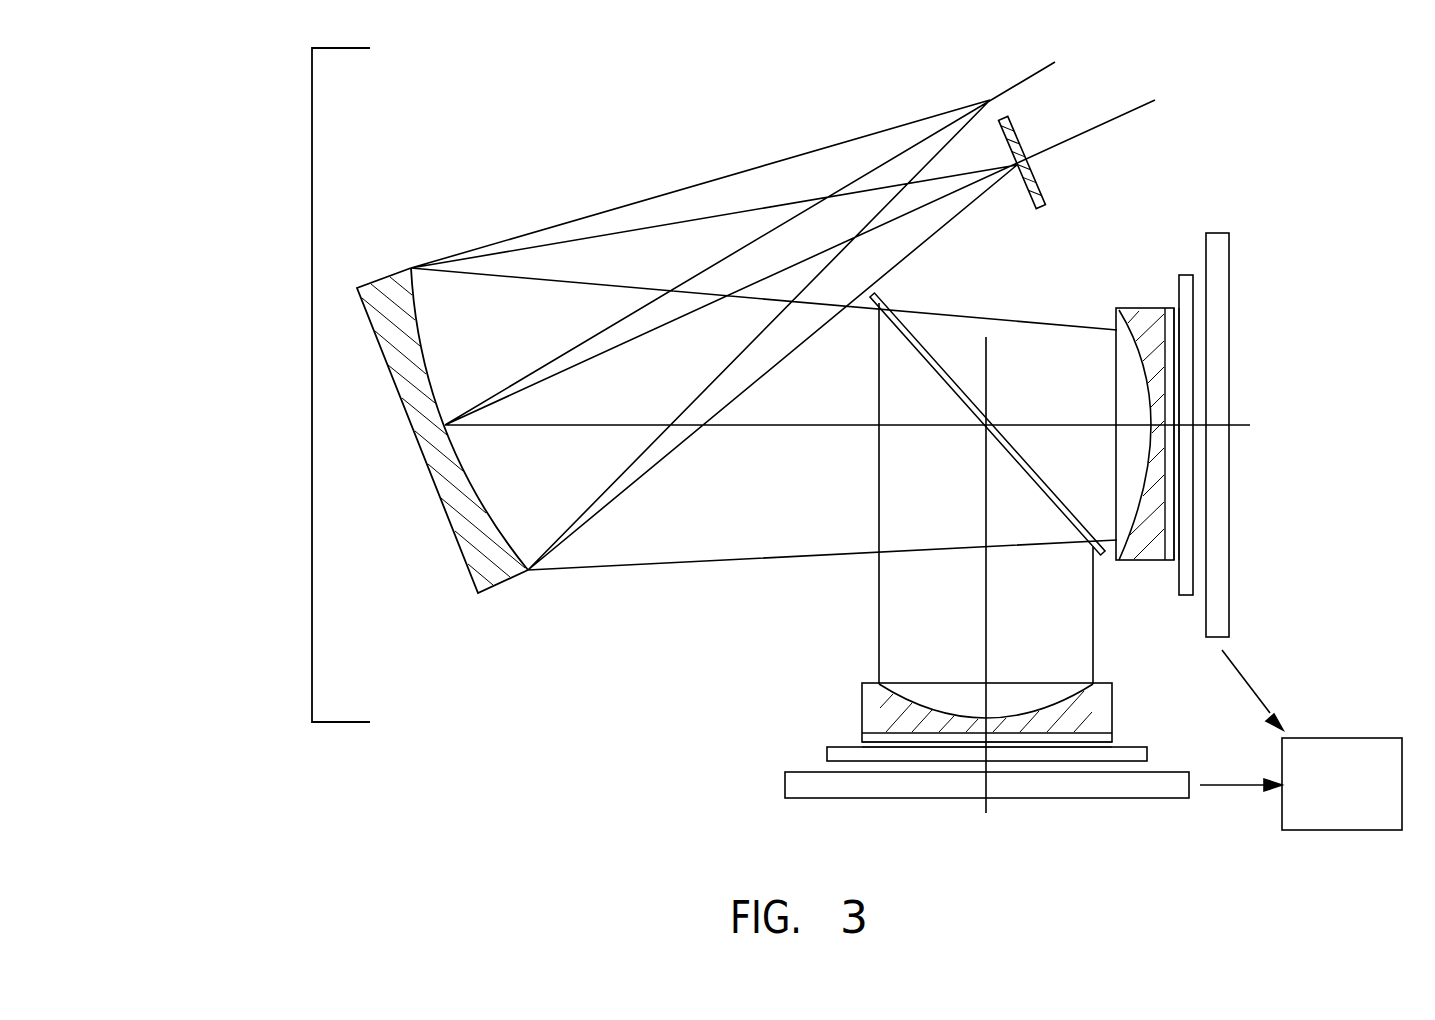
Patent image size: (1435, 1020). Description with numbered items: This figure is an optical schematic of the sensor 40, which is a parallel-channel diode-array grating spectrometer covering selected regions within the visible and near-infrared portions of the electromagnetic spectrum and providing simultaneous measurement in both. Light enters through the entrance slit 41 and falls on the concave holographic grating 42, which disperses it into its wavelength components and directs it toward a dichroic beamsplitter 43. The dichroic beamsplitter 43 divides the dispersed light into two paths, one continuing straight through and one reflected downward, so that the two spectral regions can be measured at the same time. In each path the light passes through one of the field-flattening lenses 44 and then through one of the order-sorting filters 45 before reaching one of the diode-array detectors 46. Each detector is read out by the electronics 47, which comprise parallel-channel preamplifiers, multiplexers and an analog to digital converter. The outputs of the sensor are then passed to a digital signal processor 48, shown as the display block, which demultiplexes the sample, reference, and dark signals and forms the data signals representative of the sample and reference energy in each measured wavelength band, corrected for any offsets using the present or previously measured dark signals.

The sensor 40 is at (313, 388).
The entrance slit 41 is at (1016, 130).
The concave holographic grating 42 is at (442, 511).
The dichroic beamsplitter 43 is at (1050, 484).
The field-flattening lenses 44 is at (1148, 562).
The order-sorting filters 45 is at (1175, 350).
The diode-array detectors 46 is at (1178, 289).
The electronics 47 is at (1231, 505).
The digital signal processor 48 is at (1363, 738).